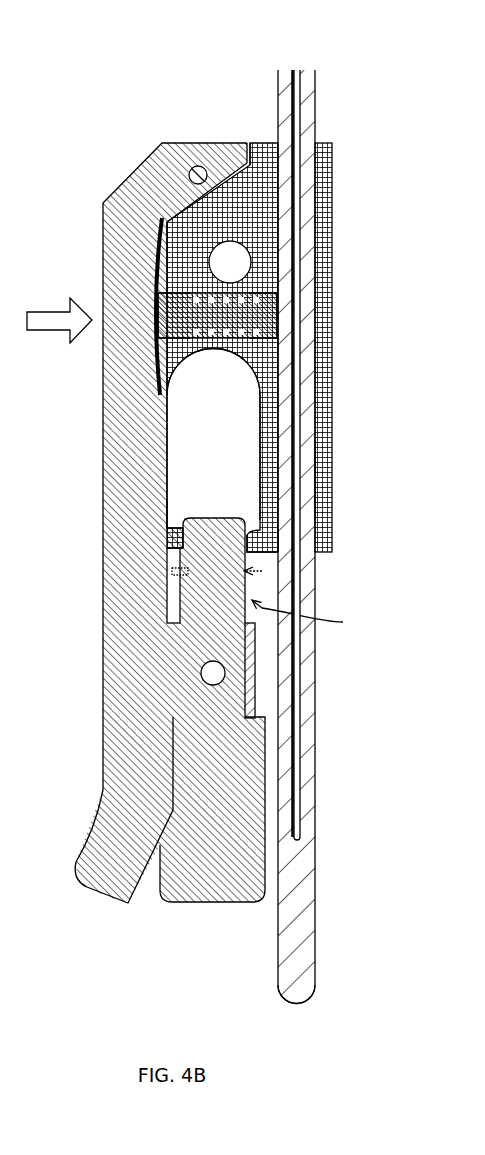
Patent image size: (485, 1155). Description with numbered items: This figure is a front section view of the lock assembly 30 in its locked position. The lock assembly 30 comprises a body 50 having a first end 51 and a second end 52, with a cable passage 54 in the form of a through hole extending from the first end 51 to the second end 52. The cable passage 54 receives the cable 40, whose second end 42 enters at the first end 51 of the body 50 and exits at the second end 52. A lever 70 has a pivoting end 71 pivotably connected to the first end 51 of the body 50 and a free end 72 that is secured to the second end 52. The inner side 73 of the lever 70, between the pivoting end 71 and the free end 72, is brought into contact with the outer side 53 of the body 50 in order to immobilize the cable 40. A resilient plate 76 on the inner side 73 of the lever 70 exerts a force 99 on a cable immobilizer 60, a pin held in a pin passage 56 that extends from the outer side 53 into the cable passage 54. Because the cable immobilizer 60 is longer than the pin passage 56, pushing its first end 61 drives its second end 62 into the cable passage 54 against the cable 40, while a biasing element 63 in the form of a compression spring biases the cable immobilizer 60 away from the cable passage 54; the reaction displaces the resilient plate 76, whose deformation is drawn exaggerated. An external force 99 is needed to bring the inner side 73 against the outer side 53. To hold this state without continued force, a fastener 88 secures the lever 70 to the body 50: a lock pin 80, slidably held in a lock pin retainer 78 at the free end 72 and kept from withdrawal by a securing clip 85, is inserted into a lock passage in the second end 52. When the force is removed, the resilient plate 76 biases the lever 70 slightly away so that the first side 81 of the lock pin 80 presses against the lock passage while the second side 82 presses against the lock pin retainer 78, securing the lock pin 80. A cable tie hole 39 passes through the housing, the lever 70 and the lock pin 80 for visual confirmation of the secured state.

The lock assembly 30 is at (114, 118).
The cable tie hole 39 is at (225, 681).
The cable 40 is at (292, 893).
The second end of the cable 42 is at (307, 990).
The body 50 is at (323, 202).
The first end of the body 51 is at (264, 143).
The second end of the body 52 is at (270, 553).
The outer side of the body 53 is at (167, 538).
The cable passage 54 is at (318, 475).
The pin passage 56 is at (216, 340).
The cable immobilizer 60 is at (235, 320).
The first end of the cable immobilizer 61 is at (167, 320).
The second end of the cable immobilizer 62 is at (262, 330).
The biasing element 63 is at (246, 280).
The lever 70 is at (112, 445).
The pivoting end of the lever 71 is at (198, 165).
The free end of the lever 72 is at (113, 730).
The inner side of the lever 73 is at (165, 522).
The resilient plate 76 is at (155, 262).
The lock pin retainer 78 is at (177, 665).
The lock pin 80 is at (235, 537).
The first side of the lock pin 81 is at (190, 537).
The second side of the lock pin 82 is at (245, 659).
The securing clip 85 is at (173, 573).
The fastener 88 is at (309, 617).
The external force 99 is at (42, 320).